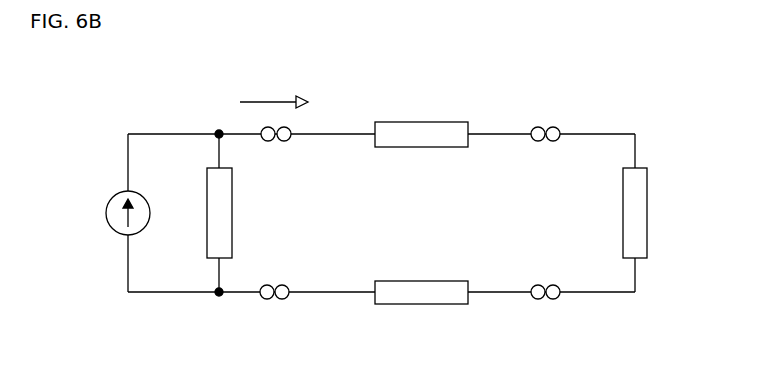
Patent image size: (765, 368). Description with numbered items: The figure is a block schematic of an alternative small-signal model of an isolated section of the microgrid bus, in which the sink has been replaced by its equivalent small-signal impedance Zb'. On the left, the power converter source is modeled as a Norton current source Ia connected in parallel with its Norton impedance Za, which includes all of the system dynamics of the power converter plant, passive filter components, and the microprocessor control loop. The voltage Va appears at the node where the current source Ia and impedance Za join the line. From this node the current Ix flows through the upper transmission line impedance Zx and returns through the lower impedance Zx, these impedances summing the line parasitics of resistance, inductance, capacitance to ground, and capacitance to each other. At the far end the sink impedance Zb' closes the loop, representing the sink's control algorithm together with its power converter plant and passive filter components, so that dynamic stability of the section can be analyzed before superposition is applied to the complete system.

The current source Ia is at (111, 213).
The voltage Va is at (193, 205).
The Norton impedance Za is at (232, 213).
The current Ix is at (274, 95).
The transmission line impedance Zx is at (421, 204).
The equivalent small-signal impedance Zb' is at (651, 213).